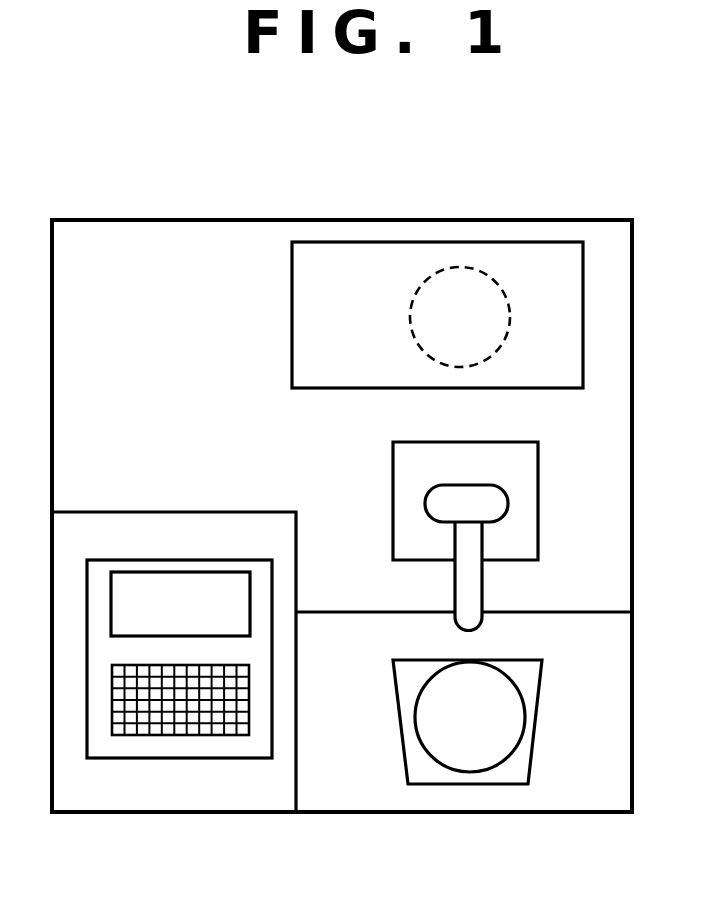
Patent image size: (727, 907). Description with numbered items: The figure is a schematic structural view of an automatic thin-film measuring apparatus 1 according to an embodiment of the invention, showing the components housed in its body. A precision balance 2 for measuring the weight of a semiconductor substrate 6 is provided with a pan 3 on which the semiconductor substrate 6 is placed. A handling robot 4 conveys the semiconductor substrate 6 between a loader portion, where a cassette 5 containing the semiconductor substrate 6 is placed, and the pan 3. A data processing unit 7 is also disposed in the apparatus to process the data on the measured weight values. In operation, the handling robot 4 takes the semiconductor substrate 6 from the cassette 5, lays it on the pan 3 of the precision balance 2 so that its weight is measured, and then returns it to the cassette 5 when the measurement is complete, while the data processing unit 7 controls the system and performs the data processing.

The automatic thin-film measuring apparatus 1 is at (573, 220).
The precision balance 2 is at (585, 258).
The pan 3 is at (478, 268).
The handling robot 4 is at (520, 473).
The cassette 5 is at (540, 688).
The semiconductor substrate 6 is at (518, 737).
The data processing unit 7 is at (150, 745).